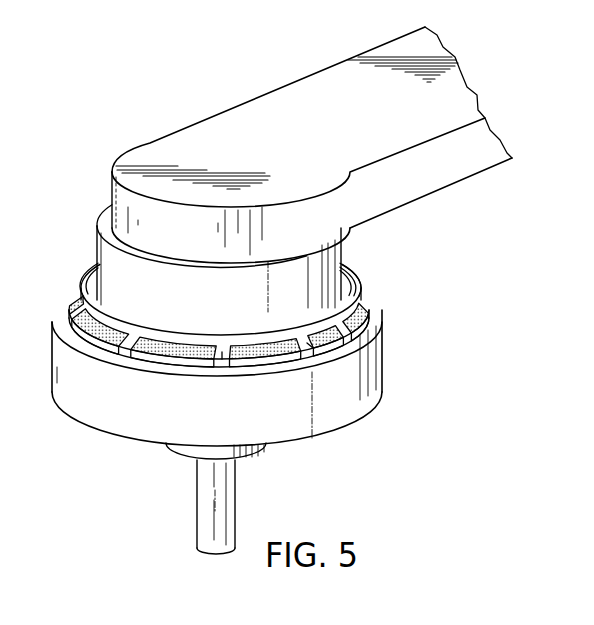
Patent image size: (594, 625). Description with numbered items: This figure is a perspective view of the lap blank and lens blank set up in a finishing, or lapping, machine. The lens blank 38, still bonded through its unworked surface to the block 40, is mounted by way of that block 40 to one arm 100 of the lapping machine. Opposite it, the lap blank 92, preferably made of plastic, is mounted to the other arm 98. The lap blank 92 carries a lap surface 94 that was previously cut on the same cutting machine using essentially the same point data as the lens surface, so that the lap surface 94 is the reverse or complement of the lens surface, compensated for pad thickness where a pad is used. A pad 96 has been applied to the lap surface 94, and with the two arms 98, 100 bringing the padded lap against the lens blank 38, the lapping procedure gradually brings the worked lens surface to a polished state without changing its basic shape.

The arm 100 is at (452, 163).
The block 40 is at (313, 272).
The lens blank 38 is at (353, 283).
The pad 96 is at (367, 322).
The lap surface 94 is at (336, 378).
The lap blank 92 is at (365, 368).
The arm 98 is at (235, 494).